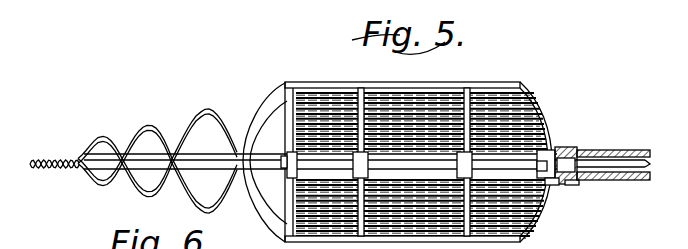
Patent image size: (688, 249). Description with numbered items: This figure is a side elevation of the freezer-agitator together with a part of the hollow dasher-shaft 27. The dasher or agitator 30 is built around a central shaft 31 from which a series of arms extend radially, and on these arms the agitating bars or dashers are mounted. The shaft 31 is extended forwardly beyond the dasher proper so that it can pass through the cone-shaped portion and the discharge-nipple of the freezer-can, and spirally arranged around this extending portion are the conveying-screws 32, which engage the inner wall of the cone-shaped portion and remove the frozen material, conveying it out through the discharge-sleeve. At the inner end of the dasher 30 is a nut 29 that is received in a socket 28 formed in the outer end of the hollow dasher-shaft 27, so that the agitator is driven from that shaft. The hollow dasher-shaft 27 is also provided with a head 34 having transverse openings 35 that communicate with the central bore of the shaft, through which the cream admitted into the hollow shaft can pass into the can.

The hollow dasher-shaft 27 is at (630, 179).
The socket 28 is at (560, 185).
The nut 29 is at (553, 150).
The dasher or agitator 30 is at (514, 100).
The shaft 31 is at (256, 165).
The conveying-screws 32 is at (80, 159).
The head 34 is at (562, 148).
The transverse openings 35 is at (578, 184).